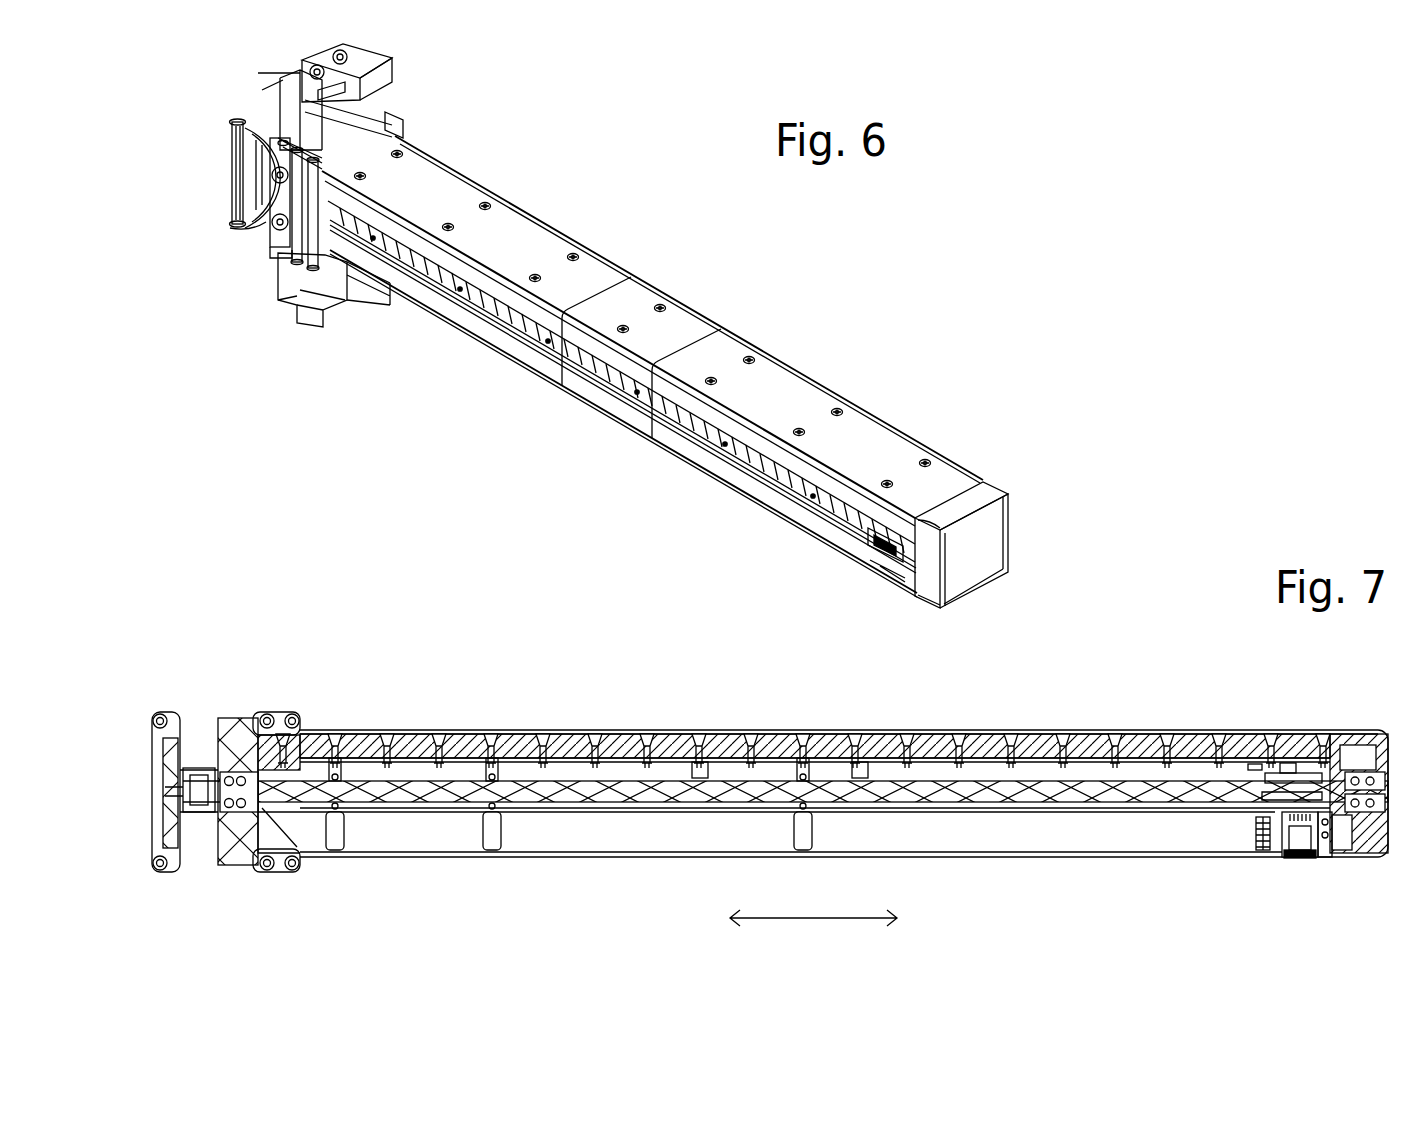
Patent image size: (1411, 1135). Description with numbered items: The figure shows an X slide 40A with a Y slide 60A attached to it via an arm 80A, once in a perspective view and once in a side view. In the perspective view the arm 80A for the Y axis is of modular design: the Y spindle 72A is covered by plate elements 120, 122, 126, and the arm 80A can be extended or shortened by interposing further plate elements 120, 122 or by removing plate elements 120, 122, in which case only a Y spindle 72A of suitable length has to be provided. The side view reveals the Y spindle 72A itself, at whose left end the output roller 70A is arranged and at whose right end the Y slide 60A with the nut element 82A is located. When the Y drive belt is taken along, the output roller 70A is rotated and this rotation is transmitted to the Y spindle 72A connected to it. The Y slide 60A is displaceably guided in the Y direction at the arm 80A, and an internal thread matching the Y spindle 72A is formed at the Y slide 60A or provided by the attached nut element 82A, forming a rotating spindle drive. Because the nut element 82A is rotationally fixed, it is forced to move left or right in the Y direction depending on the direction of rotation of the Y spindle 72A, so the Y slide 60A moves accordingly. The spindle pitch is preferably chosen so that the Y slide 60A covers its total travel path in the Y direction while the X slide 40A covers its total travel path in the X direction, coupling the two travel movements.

In FIG. 6, the arm 80A is at (499, 118).
In FIG. 7, the arm 80A is at (1134, 612).
In FIG. 6, the output roller 70A is at (263, 140).
In FIG. 7, the output roller 70A is at (197, 753).
In FIG. 6, the X slide 40A is at (282, 200).
In FIG. 6, the plate element 120 is at (497, 228).
In FIG. 6, the plate element 122 is at (637, 305).
In FIG. 6, the plate element 126 is at (980, 545).
In FIG. 6, the Y slide 60A is at (880, 556).
In FIG. 7, the Y slide 60A is at (1307, 818).
In FIG. 7, the Y spindle 72A is at (1103, 790).
In FIG. 7, the nut element 82A is at (1288, 787).